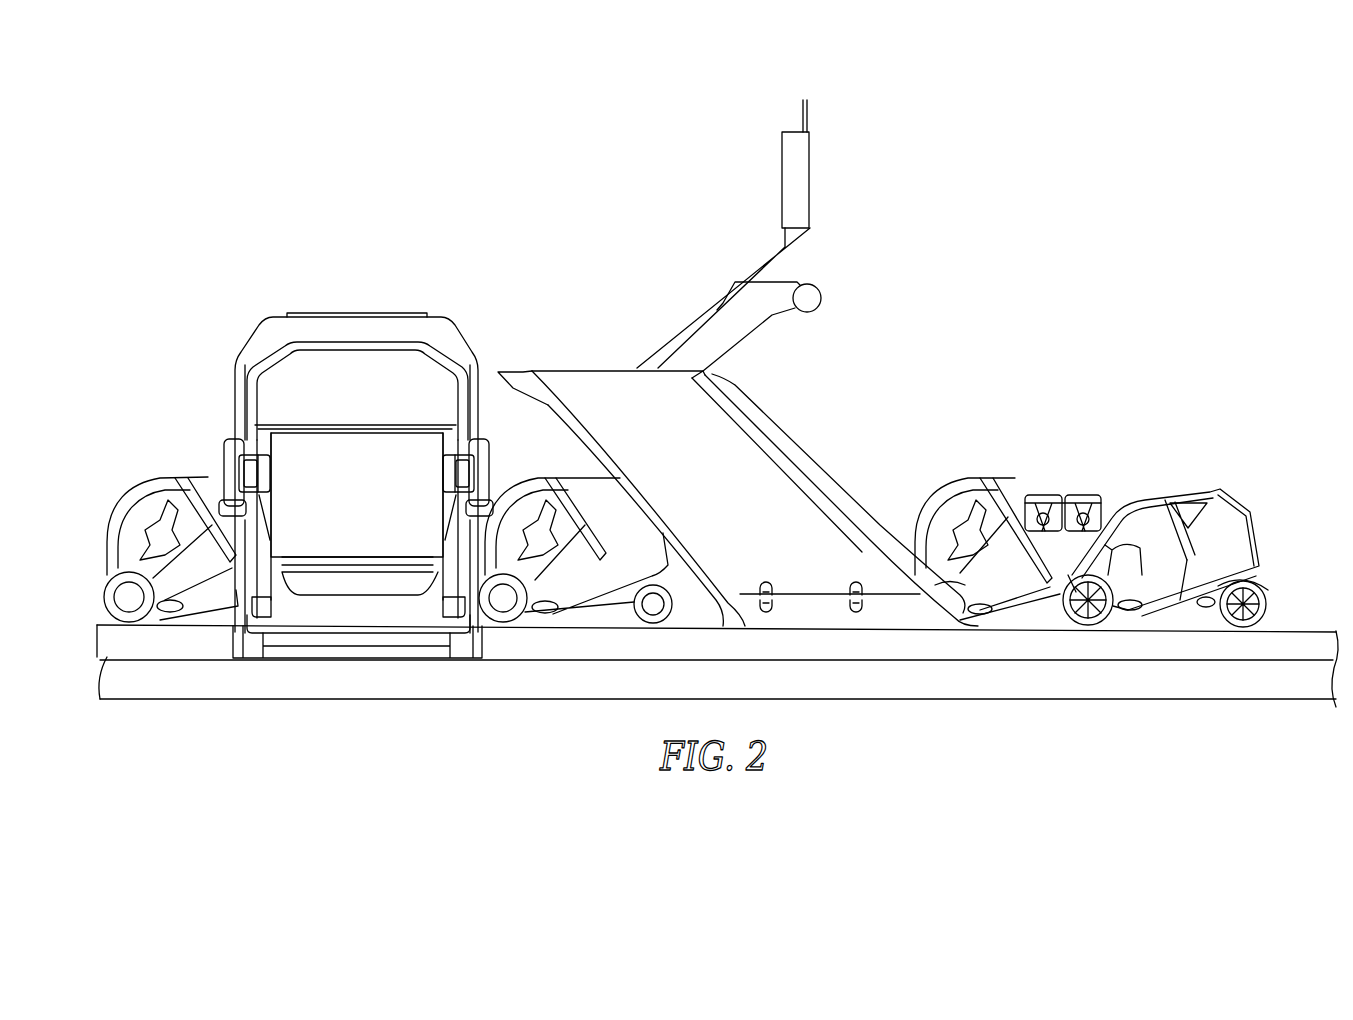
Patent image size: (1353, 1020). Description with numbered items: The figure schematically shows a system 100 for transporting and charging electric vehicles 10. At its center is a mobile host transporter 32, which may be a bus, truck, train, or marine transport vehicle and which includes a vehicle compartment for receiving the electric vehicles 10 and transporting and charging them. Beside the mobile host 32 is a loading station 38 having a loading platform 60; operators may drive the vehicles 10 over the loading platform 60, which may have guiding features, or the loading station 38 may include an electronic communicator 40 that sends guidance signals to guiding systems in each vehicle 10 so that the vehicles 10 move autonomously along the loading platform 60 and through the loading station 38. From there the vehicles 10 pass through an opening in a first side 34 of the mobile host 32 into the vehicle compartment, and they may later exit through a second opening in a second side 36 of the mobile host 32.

The electric vehicle 10 is at (156, 470).
The mobile host transporter 32 is at (263, 345).
The first side 34 is at (483, 376).
The second side 36 is at (217, 453).
The loading station 38 is at (597, 366).
The electronic communicator 40 is at (814, 191).
The loading platform 60 is at (938, 640).
The system 100 is at (857, 324).